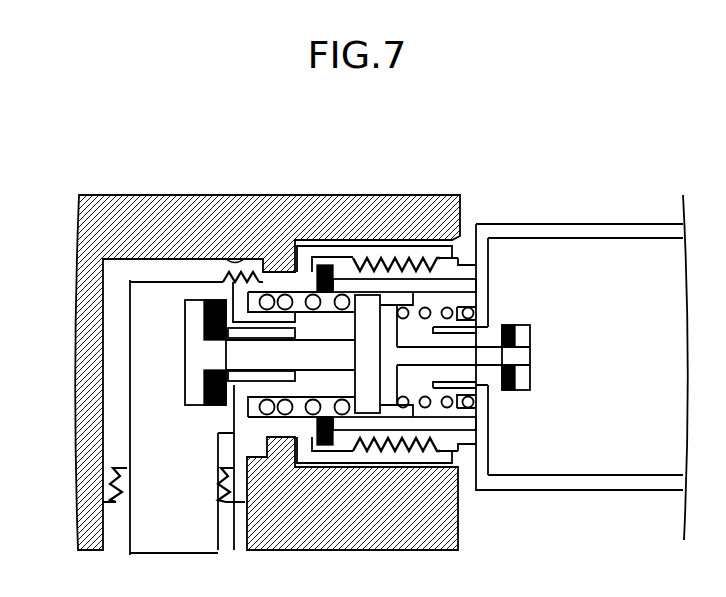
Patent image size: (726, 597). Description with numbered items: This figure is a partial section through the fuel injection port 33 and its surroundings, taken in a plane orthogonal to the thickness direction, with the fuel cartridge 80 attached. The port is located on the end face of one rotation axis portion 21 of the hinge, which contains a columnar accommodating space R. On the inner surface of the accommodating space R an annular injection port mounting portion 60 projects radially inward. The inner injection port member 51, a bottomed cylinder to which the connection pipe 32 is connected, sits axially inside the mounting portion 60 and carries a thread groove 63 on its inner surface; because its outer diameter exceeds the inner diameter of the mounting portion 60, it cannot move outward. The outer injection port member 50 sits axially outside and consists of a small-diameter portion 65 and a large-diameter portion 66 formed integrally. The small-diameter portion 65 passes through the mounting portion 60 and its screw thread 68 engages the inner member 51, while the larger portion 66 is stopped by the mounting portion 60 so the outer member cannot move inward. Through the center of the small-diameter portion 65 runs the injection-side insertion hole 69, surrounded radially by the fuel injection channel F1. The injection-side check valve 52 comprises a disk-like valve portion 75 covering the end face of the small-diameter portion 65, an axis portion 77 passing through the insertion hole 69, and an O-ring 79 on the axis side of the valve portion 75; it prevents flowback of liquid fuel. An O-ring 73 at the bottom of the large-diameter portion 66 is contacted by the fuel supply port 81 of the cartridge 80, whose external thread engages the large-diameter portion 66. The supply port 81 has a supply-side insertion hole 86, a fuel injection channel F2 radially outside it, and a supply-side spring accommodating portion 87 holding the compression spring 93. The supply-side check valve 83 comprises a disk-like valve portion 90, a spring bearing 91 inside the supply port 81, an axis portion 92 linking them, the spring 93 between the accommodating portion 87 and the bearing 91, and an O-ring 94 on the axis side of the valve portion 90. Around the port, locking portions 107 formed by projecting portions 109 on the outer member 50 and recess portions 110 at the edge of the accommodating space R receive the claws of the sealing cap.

The rotation axis portion 21 is at (375, 205).
The connection pipe 32 is at (112, 533).
The fuel injection port 33 is at (283, 184).
The outer injection port member 50 is at (311, 228).
The inner injection port member 51 is at (157, 268).
The injection-side check valve 52 is at (162, 340).
The injection port mounting portion 60 is at (286, 430).
The thread groove 63 is at (227, 281).
The small-diameter portion 65 is at (275, 270).
The large-diameter portion 66 is at (360, 255).
The screw thread 68 is at (235, 436).
The injection-side insertion hole 69 is at (272, 344).
The O-ring 73 is at (341, 447).
The valve portion 75 is at (184, 372).
The axis portion 77 is at (252, 352).
The O-ring 79 is at (216, 408).
The fuel cartridge 80 is at (625, 216).
The fuel supply port 81 is at (408, 277).
The supply-side check valve 83 is at (508, 402).
The supply-side insertion hole 86 is at (479, 360).
The supply-side spring accommodating portion 87 is at (461, 314).
The valve portion 90 is at (531, 348).
The spring bearing 91 is at (388, 400).
The axis portion 92 is at (413, 390).
The compression spring 93 is at (474, 404).
The O-ring 94 is at (507, 325).
The locking portion 107 is at (480, 221).
The projecting portion 109 is at (473, 225).
The recess portion 110 is at (427, 220).
The fuel injection channel F1 is at (297, 379).
The fuel injection channel F2 is at (476, 333).
The accommodating space R is at (243, 262).